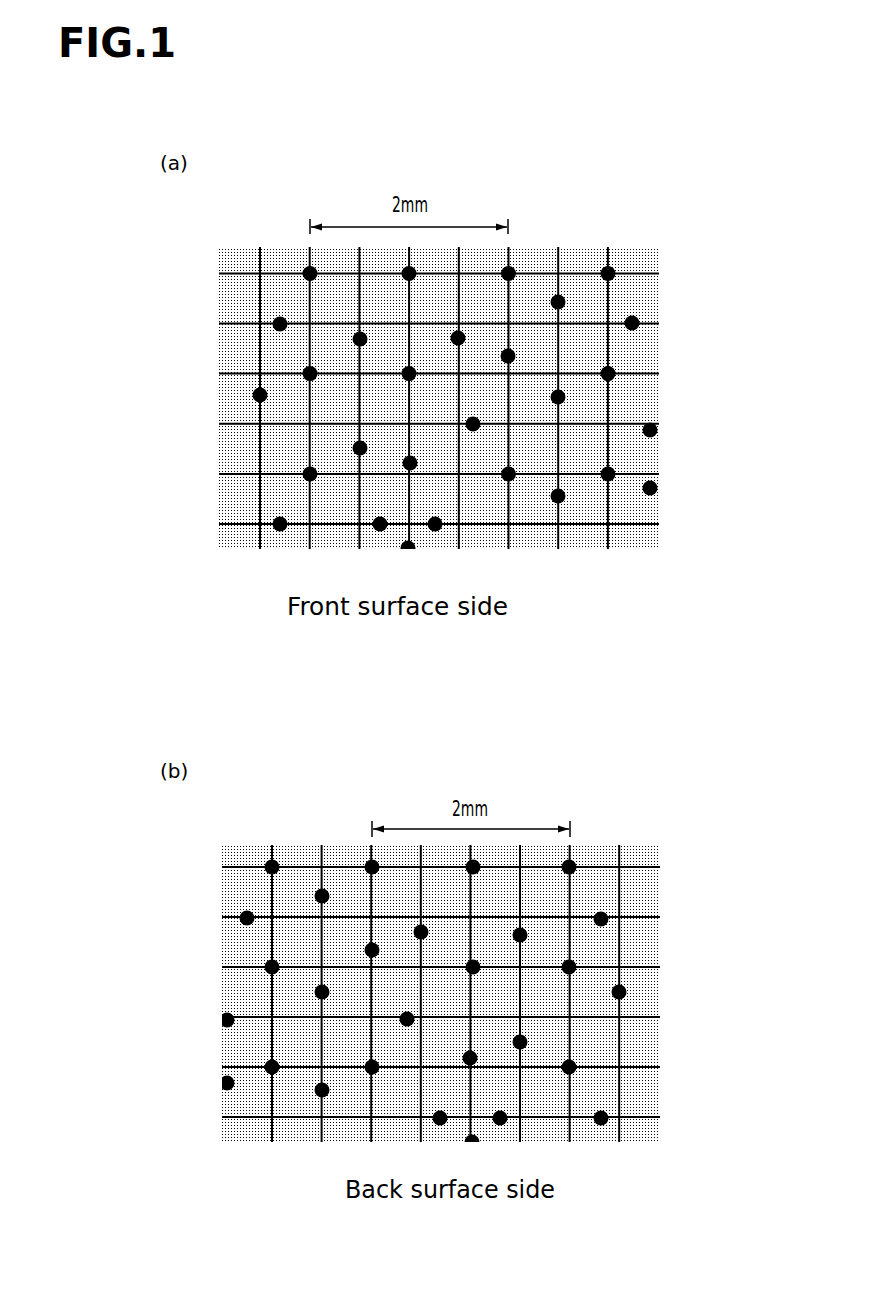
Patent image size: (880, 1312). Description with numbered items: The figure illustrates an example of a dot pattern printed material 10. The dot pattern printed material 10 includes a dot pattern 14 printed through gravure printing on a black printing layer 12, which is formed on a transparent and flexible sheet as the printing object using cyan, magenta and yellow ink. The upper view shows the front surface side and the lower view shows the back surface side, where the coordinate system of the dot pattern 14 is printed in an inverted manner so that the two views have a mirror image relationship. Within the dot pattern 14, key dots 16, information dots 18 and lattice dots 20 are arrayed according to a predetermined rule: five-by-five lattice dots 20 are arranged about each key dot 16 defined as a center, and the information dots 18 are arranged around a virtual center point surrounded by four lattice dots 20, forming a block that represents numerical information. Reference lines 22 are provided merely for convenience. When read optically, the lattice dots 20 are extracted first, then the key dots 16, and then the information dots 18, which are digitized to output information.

The dot pattern printed material 10 is at (694, 136).
The black printing layer 12 is at (643, 396).
The dot pattern 14 is at (608, 273).
The key dot 16 is at (508, 356).
The information dot 18 is at (558, 303).
The lattice dot 20 is at (309, 273).
The reference line 22 is at (595, 527).